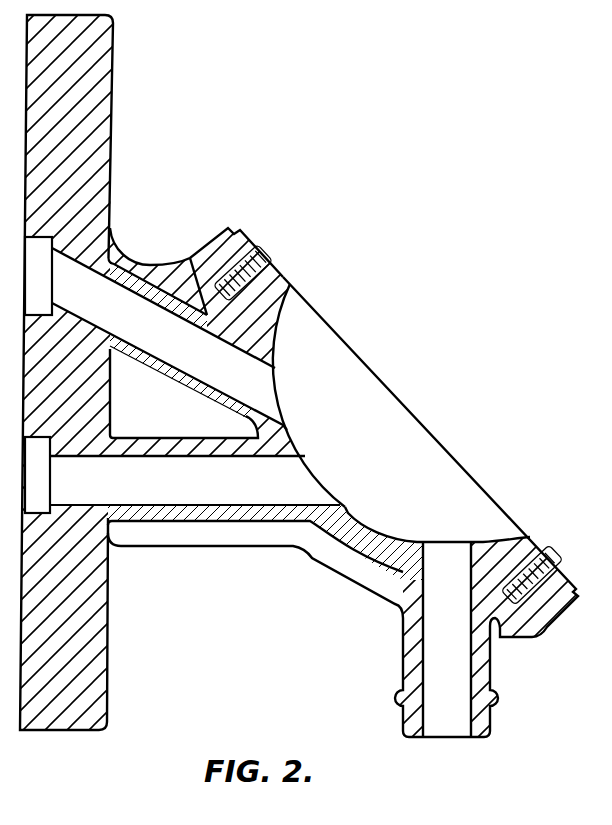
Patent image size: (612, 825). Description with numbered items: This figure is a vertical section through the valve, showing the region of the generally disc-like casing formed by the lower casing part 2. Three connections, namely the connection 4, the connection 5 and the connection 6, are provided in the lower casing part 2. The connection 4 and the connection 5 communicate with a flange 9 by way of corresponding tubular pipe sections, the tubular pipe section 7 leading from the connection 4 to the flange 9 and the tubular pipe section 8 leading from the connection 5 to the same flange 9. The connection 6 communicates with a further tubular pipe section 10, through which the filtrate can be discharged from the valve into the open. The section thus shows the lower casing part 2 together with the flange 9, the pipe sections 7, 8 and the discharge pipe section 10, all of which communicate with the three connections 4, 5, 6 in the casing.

The lower casing part 2 is at (318, 562).
The connection 4 is at (267, 392).
The connection 5 is at (313, 483).
The connection 6 is at (444, 548).
The tubular pipe section 7 is at (128, 267).
The tubular pipe section 8 is at (180, 508).
The flange 9 is at (112, 121).
The tubular pipe section 10 is at (404, 637).